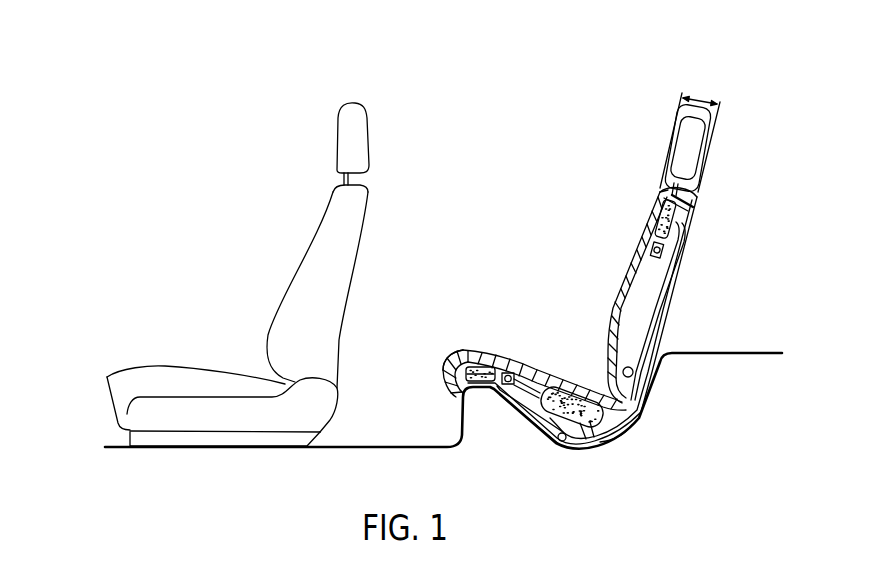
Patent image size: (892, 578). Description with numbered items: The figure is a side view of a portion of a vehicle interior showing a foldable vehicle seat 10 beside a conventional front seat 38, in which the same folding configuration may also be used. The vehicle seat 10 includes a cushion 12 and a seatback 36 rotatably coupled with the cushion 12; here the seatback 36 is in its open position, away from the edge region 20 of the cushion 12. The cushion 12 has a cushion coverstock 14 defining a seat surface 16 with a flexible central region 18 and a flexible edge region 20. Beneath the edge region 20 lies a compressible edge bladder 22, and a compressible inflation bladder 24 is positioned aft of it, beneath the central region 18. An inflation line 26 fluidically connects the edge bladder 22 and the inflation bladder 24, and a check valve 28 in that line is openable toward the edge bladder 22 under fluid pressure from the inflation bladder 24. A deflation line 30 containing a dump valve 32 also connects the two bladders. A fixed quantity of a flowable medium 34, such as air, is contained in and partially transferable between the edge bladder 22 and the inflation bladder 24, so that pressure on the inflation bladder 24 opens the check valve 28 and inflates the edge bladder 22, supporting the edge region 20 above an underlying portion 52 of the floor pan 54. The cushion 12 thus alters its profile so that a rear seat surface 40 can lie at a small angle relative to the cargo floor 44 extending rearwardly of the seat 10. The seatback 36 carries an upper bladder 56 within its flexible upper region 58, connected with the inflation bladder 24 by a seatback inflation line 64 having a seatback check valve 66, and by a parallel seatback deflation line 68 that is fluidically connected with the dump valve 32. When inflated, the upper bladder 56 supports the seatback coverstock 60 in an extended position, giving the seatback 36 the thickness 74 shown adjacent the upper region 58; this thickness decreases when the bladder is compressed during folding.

The vehicle seat 10 is at (748, 207).
The cushion 12 is at (617, 447).
The cushion coverstock 14 is at (524, 366).
The seat surface 16 is at (549, 372).
The central region 18 is at (604, 388).
The edge region 20 is at (507, 347).
The edge bladder 22 is at (478, 392).
The inflation bladder 24 is at (556, 418).
The inflation line 26 is at (509, 397).
The check valve 28 is at (502, 388).
The deflation line 30 is at (537, 430).
The dump valve 32 is at (566, 446).
The flowable medium 34 is at (587, 420).
The seatback 36 is at (680, 290).
The front seat 38 is at (237, 213).
The rear seat surface 40 is at (668, 322).
The floor 44 is at (726, 353).
The underlying portion 52 is at (462, 400).
The floor pan 54 is at (628, 432).
The upper bladder 56 is at (672, 220).
The upper region 58 is at (652, 192).
The seatback coverstock 60 is at (606, 316).
The seatback inflation line 64 is at (656, 343).
The seatback check valve 66 is at (650, 250).
The seatback deflation line 68 is at (676, 262).
The thickness 74 is at (700, 105).